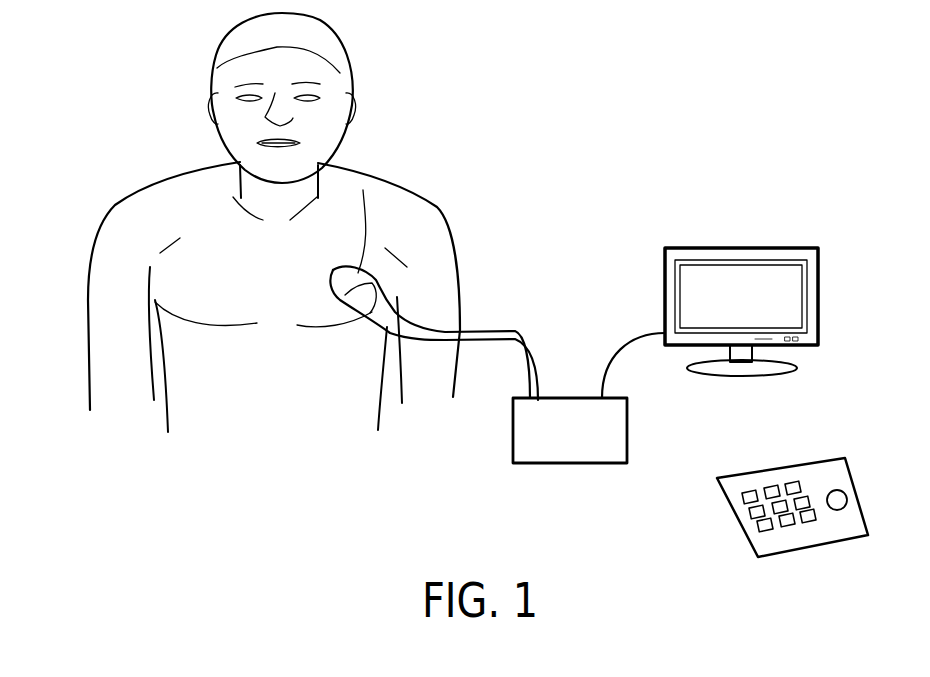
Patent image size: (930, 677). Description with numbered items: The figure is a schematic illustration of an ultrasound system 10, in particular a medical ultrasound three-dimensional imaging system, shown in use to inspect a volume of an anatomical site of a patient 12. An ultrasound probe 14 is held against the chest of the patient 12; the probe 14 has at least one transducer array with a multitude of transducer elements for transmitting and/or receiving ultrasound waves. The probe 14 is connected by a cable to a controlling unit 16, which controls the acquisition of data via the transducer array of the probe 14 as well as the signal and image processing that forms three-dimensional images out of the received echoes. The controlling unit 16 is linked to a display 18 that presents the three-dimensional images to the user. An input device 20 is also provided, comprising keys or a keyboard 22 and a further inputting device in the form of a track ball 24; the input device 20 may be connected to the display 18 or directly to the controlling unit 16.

The ultrasound system 10 is at (715, 97).
The patient 12 is at (397, 202).
The ultrasound probe 14 is at (358, 272).
The controlling unit 16 is at (627, 432).
The display 18 is at (742, 248).
The input device 20 is at (742, 535).
The keyboard 22 is at (800, 545).
The track ball 24 is at (835, 492).